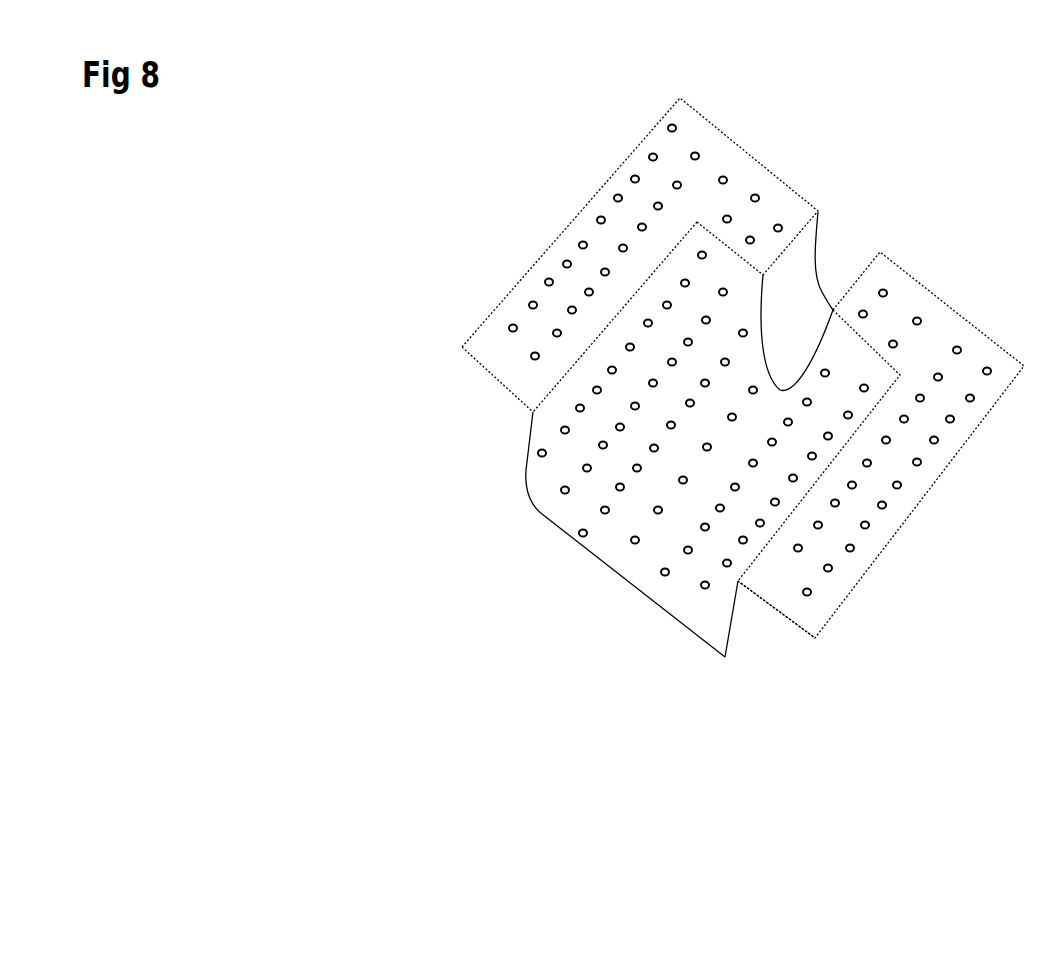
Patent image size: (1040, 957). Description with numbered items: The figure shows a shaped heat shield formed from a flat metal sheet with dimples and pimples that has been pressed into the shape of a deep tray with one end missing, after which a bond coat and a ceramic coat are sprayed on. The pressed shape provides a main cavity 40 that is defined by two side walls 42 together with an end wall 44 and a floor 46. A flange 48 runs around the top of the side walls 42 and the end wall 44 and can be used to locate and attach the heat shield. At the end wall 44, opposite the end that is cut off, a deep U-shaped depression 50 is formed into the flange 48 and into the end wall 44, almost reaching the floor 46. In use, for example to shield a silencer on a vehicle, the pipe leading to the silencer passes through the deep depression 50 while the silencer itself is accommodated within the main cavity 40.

The main cavity 40 is at (657, 477).
The side walls 42 is at (573, 445).
The end wall 44 is at (678, 315).
The floor 46 is at (688, 570).
The flange 48 is at (738, 166).
The U-shaped depression 50 is at (800, 300).